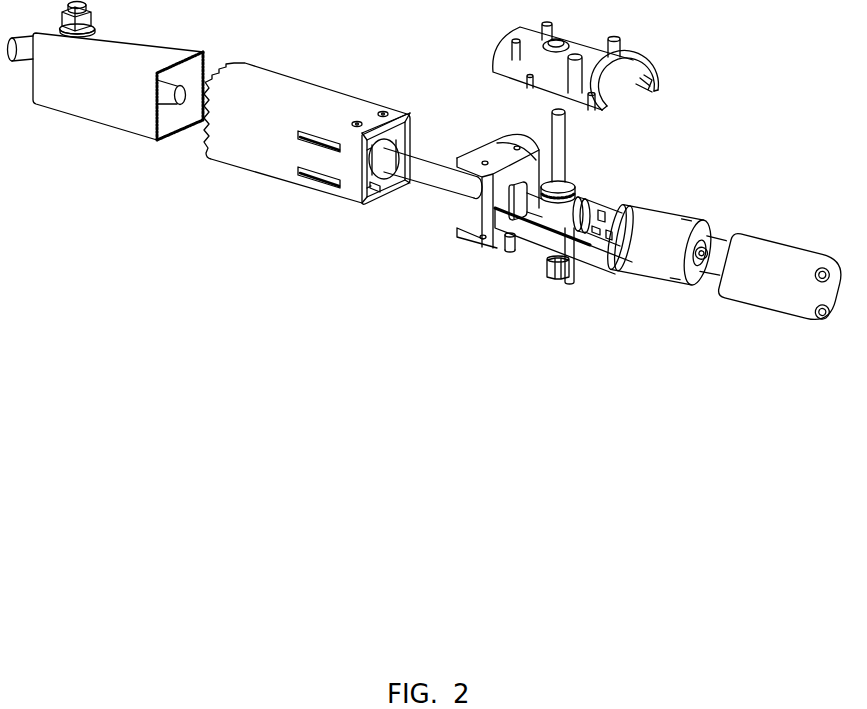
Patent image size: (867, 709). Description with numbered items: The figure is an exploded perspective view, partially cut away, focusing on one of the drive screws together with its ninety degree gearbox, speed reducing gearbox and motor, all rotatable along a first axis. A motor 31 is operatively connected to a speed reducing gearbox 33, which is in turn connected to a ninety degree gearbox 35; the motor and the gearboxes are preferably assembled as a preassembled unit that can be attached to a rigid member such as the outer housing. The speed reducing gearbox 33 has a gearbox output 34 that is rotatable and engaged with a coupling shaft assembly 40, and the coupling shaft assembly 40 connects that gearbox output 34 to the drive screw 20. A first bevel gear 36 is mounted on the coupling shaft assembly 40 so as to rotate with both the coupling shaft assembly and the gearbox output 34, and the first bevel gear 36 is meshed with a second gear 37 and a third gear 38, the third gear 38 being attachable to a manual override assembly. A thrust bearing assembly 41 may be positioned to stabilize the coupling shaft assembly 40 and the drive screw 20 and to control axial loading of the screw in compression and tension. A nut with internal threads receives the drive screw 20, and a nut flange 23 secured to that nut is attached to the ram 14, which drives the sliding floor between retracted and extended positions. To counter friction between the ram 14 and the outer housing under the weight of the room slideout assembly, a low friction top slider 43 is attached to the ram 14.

The ram 14 is at (267, 83).
The drive screw 20 is at (210, 80).
The nut flange 23 is at (470, 232).
The motor 31 is at (652, 262).
The speed reducing gearbox 33 is at (655, 197).
The gearbox output 34 is at (587, 204).
The 90 degree gearbox 35 is at (534, 249).
The first bevel gear 36 is at (587, 202).
The second gear 37 is at (580, 243).
The third gear 38 is at (580, 200).
The coupling shaft assembly 40 is at (530, 168).
The thrust bearing assembly 41 is at (500, 134).
The top slider 43 is at (304, 138).